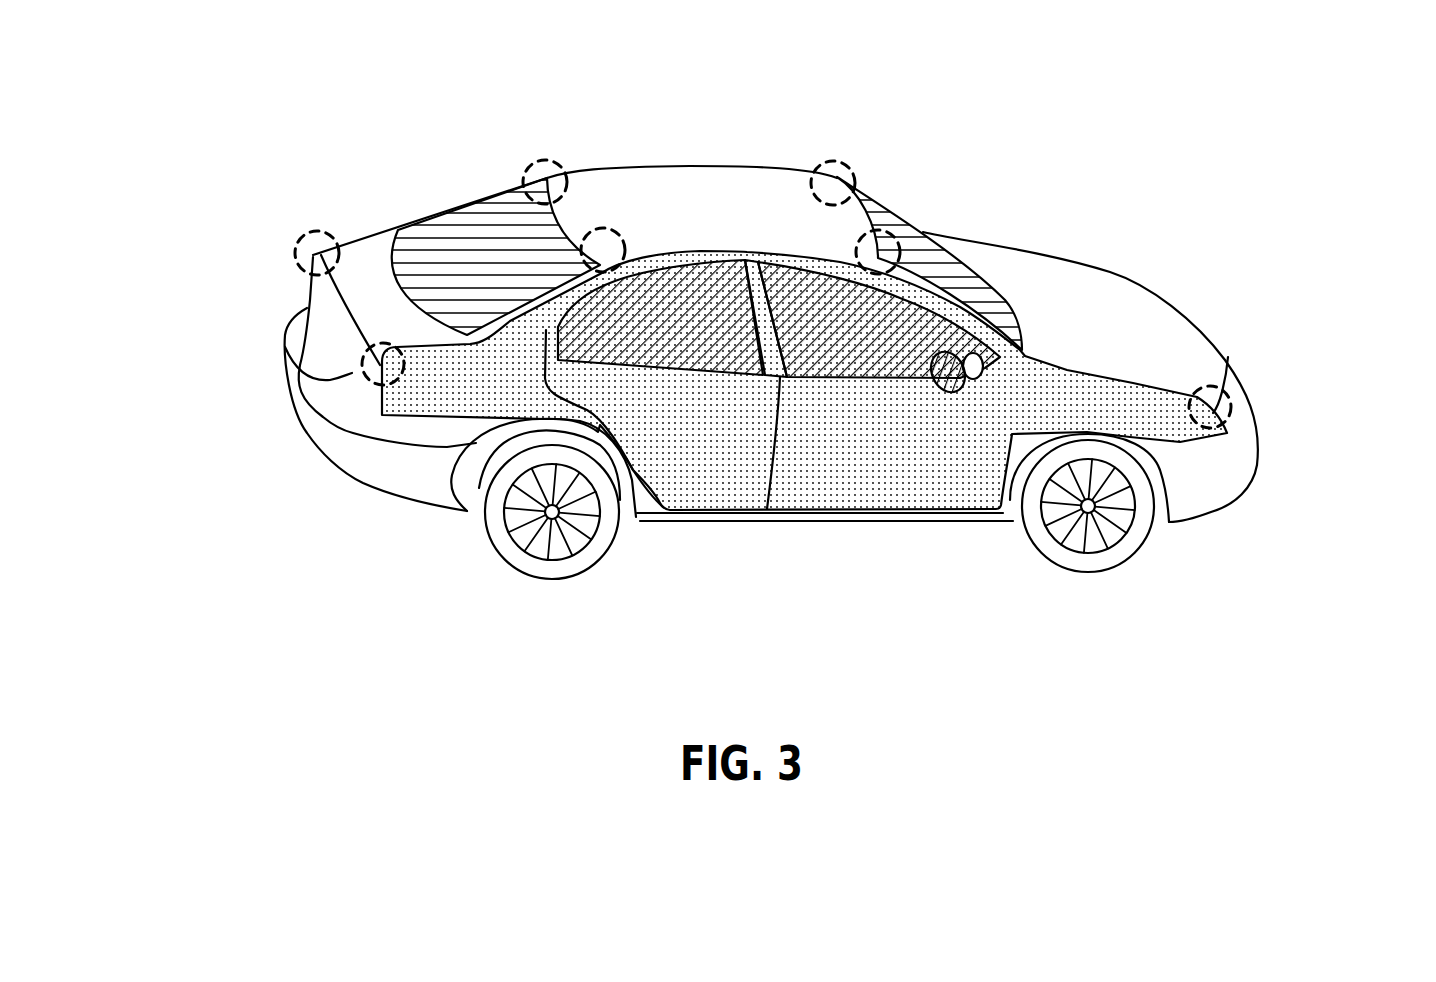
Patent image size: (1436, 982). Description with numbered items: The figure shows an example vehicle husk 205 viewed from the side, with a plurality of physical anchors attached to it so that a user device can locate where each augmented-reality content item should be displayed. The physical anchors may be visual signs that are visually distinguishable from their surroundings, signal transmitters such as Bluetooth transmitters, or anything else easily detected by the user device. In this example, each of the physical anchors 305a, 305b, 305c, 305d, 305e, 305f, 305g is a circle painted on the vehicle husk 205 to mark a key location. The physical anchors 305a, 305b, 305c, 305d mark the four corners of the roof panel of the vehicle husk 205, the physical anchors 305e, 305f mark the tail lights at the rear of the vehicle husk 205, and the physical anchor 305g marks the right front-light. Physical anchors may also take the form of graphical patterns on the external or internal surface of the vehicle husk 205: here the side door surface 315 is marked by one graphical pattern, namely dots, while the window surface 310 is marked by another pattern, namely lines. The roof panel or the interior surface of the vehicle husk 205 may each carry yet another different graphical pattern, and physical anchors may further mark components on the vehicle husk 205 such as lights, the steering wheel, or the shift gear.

The vehicle husk 205 is at (1305, 688).
The physical anchor 305a is at (547, 152).
The physical anchor 305b is at (623, 232).
The physical anchor 305c is at (855, 172).
The physical anchor 305d is at (968, 243).
The physical anchor 305e is at (295, 243).
The physical anchor 305f is at (352, 373).
The physical anchor 305g is at (1228, 390).
The window surface 310 is at (968, 283).
The side door surface 315 is at (1028, 383).